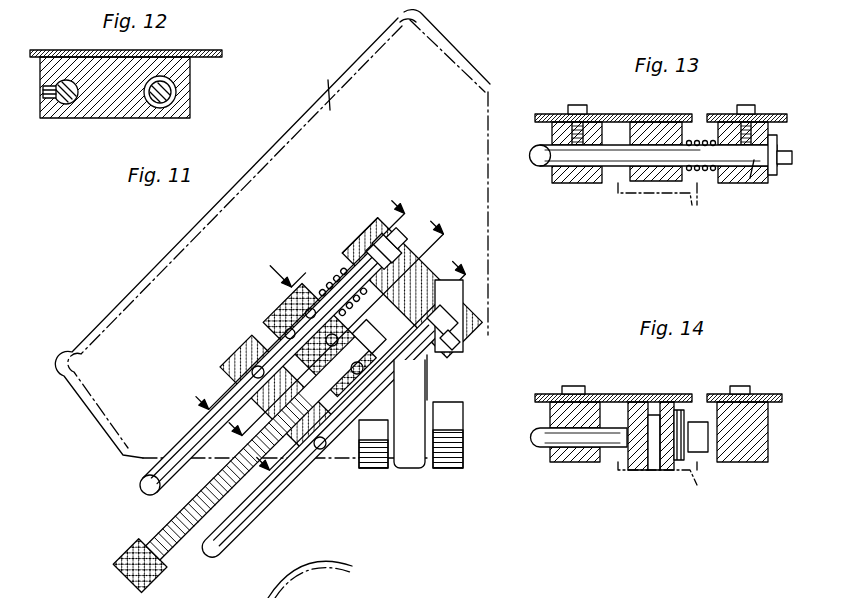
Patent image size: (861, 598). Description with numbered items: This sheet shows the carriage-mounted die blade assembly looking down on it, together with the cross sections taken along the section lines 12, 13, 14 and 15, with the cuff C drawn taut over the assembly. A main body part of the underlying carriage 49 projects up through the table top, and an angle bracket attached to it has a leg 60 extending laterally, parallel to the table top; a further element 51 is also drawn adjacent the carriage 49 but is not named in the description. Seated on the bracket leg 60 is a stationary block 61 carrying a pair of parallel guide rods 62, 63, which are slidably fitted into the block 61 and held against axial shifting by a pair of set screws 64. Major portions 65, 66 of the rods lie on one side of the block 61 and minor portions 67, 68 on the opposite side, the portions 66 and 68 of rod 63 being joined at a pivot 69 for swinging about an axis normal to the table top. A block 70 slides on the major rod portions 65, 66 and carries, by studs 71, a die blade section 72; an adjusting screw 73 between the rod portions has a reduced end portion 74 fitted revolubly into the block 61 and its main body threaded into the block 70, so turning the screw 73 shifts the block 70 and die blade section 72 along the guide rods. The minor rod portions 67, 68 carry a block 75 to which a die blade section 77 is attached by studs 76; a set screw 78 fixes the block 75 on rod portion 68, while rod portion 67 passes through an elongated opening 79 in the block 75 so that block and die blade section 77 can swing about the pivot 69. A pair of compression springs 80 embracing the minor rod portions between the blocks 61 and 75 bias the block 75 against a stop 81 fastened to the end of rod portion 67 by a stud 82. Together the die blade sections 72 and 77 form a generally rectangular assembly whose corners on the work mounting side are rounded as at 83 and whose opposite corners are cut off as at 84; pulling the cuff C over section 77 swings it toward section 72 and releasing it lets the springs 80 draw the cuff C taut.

In FIG. 11, the cuff C is at (168, 252).
In FIG. 11, the section line 12— 12 is at (349, 334).
In FIG. 11, the section line 13— 13 is at (300, 305).
In FIG. 11, the section line 14— 14 is at (336, 328).
In FIG. 11, the section line 15— 15 is at (361, 366).
In FIG. 11, the carriage 49 is at (398, 468).
In FIG. 11, the hinge knuckle 51 is at (463, 300).
In FIG. 11, the bracket leg 60 is at (369, 337).
In FIG. 13, the bracket leg 60 is at (656, 196).
In FIG. 14, the bracket leg 60 is at (678, 470).
In FIG. 11, the stationary block 61 is at (319, 339).
In FIG. 13, the stationary block 61 is at (660, 122).
In FIG. 14, the stationary block 61 is at (640, 470).
In FIG. 12, the guide rod 62 is at (163, 108).
In FIG. 11, the guide rod 62 is at (267, 369).
In FIG. 13, the guide rod 62 is at (536, 148).
In FIG. 12, the guide rod 63 is at (72, 104).
In FIG. 11, the guide rod 63 is at (321, 437).
In FIG. 11, the set screws 64 is at (300, 323).
In FIG. 11, the major rod portion 65 is at (153, 481).
In FIG. 13, the major rod portion 65 is at (535, 165).
In FIG. 11, the major rod portion 66 is at (324, 435).
In FIG. 11, the minor rod portion 67 is at (359, 235).
In FIG. 13, the minor rod portion 67 is at (752, 190).
In FIG. 11, the minor rod portion 68 is at (458, 322).
In FIG. 11, the pivot 69 is at (430, 380).
In FIG. 11, the block 70 is at (269, 384).
In FIG. 13, the block 70 is at (560, 184).
In FIG. 14, the block 70 is at (552, 412).
In FIG. 13, the studs 71 is at (576, 104).
In FIG. 11, the die blade section 72 is at (127, 299).
In FIG. 13, the die blade section 72 is at (624, 112).
In FIG. 14, the die blade section 72 is at (616, 392).
In FIG. 11, the adjusting screw 73 is at (249, 456).
In FIG. 14, the adjusting screw 73 is at (540, 448).
In FIG. 11, the reduced end portion 74 is at (350, 380).
In FIG. 12, the block 75 is at (112, 118).
In FIG. 11, the block 75 is at (424, 284).
In FIG. 13, the block 75 is at (728, 184).
In FIG. 14, the block 75 is at (742, 462).
In FIG. 13, the studs 76 is at (752, 106).
In FIG. 12, the die blade section 77 is at (218, 52).
In FIG. 11, the die blade section 77 is at (326, 83).
In FIG. 13, the die blade section 77 is at (724, 112).
In FIG. 14, the die blade section 77 is at (770, 392).
In FIG. 12, the set screw 78 is at (43, 90).
In FIG. 11, the set screw 78 is at (460, 345).
In FIG. 12, the elongated opening 79 is at (190, 107).
In FIG. 11, the elongated opening 79 is at (378, 256).
In FIG. 11, the compression springs 80 is at (342, 291).
In FIG. 13, the compression springs 80 is at (693, 138).
In FIG. 11, the stop 81 is at (396, 238).
In FIG. 13, the stop 81 is at (770, 175).
In FIG. 11, the stud 82 is at (387, 248).
In FIG. 13, the stud 82 is at (780, 134).
In FIG. 11, the rounded corners 83 is at (412, 35).
In FIG. 11, the cut-off corners 84 is at (490, 240).
In FIG. 13, the cut-off corners 84 is at (515, 232).